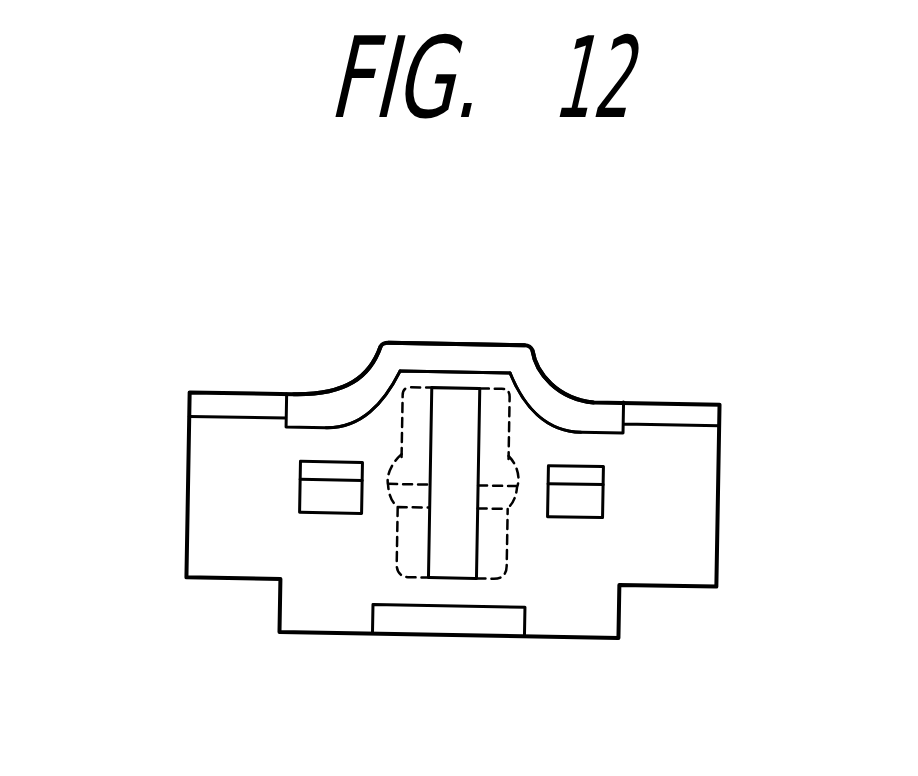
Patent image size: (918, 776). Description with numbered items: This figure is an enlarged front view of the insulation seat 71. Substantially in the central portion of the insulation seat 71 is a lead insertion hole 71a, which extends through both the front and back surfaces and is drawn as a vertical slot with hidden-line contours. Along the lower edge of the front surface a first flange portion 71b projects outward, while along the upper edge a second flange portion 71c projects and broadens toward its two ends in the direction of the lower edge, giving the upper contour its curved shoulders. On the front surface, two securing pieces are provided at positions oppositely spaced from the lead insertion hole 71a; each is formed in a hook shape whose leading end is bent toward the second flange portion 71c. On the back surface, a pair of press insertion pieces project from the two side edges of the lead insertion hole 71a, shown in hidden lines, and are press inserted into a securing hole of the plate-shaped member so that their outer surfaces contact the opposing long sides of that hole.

The insulation seat 71 is at (187, 460).
The lead insertion hole 71a is at (489, 539).
The first flange portion 71b is at (503, 620).
The second flange portion 71c is at (470, 358).